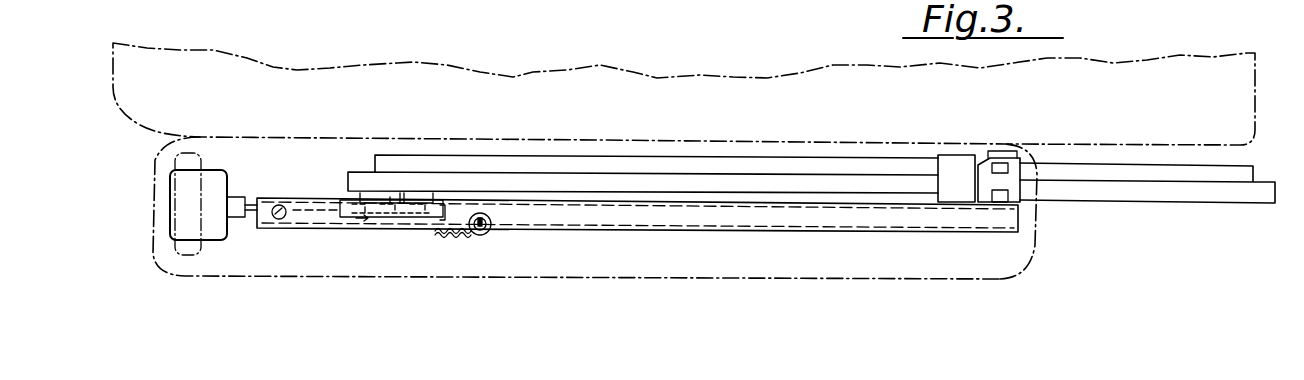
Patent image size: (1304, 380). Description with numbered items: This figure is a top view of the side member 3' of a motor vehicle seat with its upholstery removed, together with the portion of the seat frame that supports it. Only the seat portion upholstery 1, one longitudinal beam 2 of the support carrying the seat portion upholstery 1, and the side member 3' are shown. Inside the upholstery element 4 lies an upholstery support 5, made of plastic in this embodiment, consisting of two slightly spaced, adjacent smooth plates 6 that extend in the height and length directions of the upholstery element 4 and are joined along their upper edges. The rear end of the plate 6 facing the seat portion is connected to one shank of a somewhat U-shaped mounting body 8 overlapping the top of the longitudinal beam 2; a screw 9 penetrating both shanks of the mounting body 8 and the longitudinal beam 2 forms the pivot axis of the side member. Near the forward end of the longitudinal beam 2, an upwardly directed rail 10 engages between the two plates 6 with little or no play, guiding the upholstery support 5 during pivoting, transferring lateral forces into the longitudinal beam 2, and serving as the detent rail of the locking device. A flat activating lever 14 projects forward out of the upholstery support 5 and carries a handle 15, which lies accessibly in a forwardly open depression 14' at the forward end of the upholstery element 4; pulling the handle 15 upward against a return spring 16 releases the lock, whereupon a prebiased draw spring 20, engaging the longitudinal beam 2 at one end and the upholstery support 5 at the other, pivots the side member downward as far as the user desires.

The seat portion upholstery 1 is at (515, 73).
The longitudinal beam 2 is at (1083, 183).
The lower housing end 3' is at (1065, 211).
The upholstery element 4 is at (152, 247).
The upholstery support 5 is at (560, 192).
The plates 6 is at (437, 196).
The mounting body 8 is at (952, 177).
The screw 9 is at (1001, 152).
The rail 10 is at (395, 198).
The activating lever 14 is at (355, 184).
The depression 14' is at (146, 196).
The handle 15 is at (175, 193).
The return spring 16 is at (268, 226).
The draw spring 20 is at (452, 231).